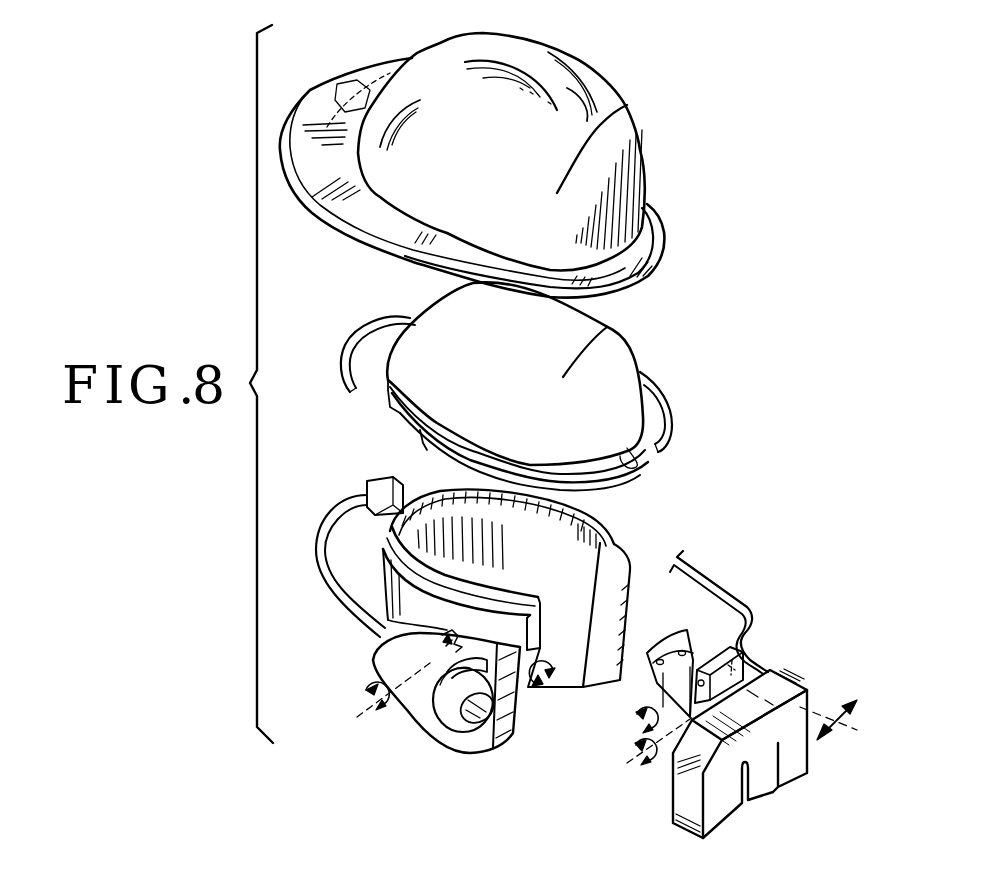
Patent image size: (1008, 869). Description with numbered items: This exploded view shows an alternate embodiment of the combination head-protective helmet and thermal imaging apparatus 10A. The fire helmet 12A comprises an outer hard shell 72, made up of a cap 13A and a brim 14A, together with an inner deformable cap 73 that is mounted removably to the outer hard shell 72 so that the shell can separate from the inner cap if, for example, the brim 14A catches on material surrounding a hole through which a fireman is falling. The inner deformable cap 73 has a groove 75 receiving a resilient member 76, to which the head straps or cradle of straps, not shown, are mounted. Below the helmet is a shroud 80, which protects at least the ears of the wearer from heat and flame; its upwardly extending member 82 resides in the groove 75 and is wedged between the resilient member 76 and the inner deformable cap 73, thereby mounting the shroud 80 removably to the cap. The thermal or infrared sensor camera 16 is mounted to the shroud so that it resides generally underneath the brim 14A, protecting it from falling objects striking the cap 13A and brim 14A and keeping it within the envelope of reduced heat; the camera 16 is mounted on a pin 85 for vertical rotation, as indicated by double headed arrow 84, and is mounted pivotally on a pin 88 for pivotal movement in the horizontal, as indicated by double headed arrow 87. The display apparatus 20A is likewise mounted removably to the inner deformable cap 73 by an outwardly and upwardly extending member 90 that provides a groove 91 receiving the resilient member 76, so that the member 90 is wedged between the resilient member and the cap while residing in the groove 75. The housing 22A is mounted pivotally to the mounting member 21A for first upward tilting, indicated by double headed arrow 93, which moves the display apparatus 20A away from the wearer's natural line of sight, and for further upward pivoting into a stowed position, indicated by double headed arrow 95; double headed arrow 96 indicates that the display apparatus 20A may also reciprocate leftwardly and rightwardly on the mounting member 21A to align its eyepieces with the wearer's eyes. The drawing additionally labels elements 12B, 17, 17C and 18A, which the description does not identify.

The combination head-protective helmet and thermal imaging apparatus 10A is at (688, 301).
The fire helmet 12A is at (676, 172).
The lower assembly 12B is at (466, 656).
The cap 13A is at (597, 67).
The brim 14A is at (360, 240).
The thermal or infrared sensor camera 16 is at (420, 703).
The strap 17 is at (333, 593).
The strap segment 17C is at (720, 590).
The strap connector block 18A is at (380, 480).
The display apparatus 20A is at (678, 832).
The mounting member 21A is at (717, 653).
The housing 22A is at (803, 683).
The outer hard shell 72 is at (627, 107).
The inner deformable cap 73 is at (623, 348).
The groove 75 is at (640, 460).
The resilient member 76 is at (670, 417).
The shroud 80 is at (504, 761).
The upwardly extending member 82 is at (590, 520).
The double headed arrow 84 is at (380, 693).
The pin 85 is at (372, 658).
The double headed arrow 87 is at (547, 678).
The pin 88 is at (477, 637).
The outwardly and upwardly extending member 90 is at (667, 647).
The groove 91 is at (687, 657).
The double headed arrow 93 is at (643, 763).
The double headed arrow 95 is at (635, 728).
The double headed arrow 96 is at (837, 738).